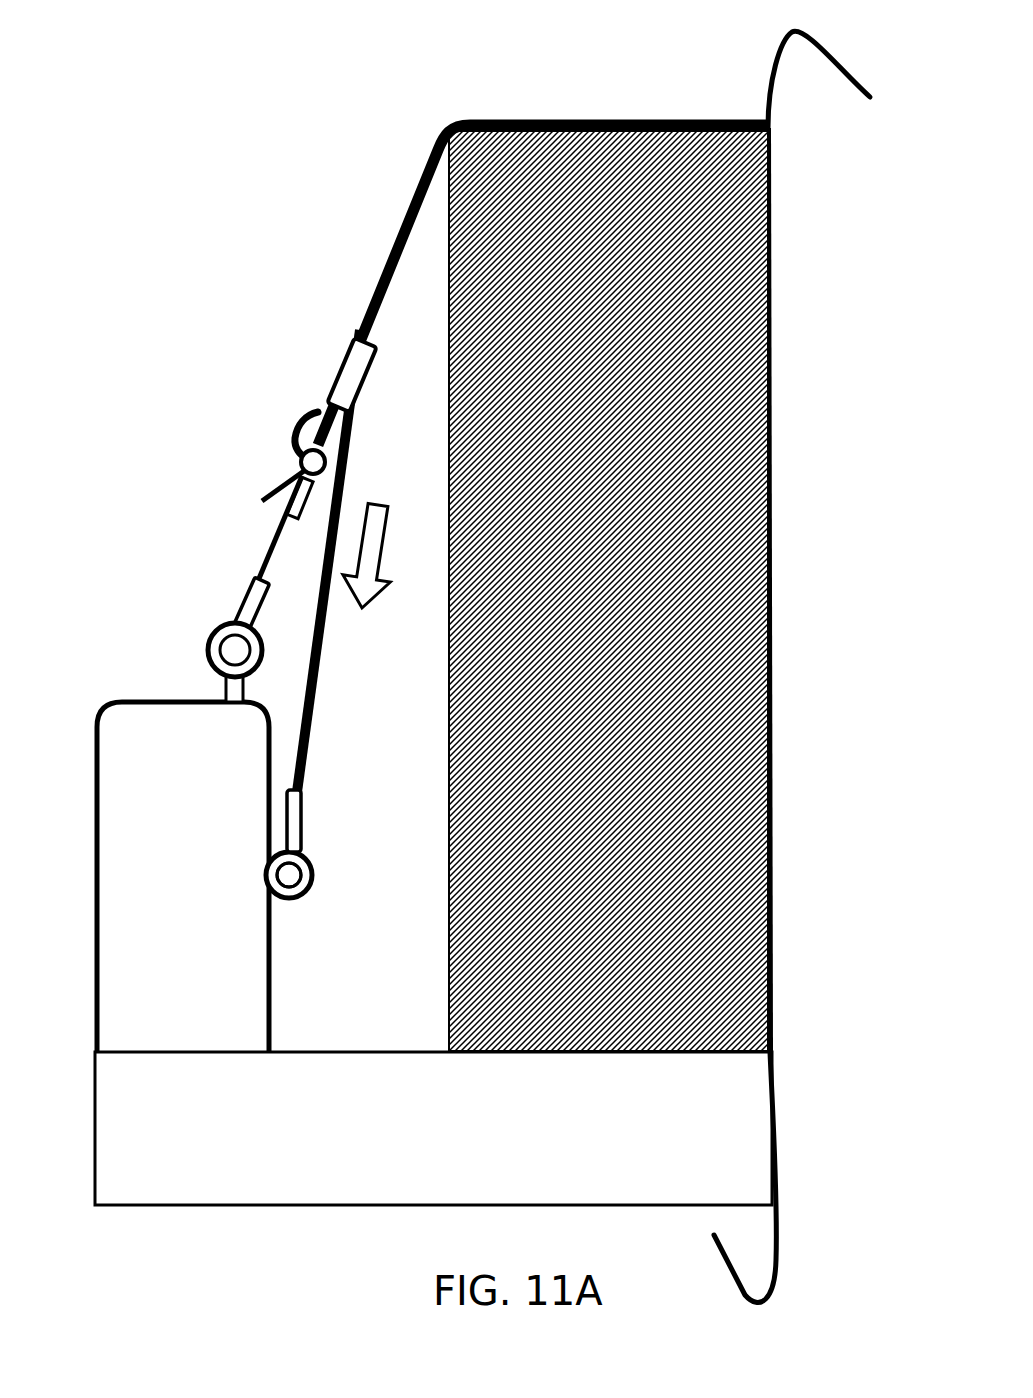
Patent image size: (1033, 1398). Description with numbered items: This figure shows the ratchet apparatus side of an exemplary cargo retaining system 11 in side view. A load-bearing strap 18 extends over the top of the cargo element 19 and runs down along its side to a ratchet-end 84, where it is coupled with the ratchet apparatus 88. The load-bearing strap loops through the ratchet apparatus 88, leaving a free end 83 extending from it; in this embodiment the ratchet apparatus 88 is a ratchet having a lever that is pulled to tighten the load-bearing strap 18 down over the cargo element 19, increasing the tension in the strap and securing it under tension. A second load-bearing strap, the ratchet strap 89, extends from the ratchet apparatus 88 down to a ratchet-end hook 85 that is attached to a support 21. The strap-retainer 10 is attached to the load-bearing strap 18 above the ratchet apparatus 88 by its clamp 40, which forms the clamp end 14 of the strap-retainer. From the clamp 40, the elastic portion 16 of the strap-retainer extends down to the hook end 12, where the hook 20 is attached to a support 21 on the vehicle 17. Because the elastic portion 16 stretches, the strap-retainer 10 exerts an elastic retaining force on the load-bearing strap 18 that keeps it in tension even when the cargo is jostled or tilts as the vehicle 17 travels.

The strap-retainer 10 is at (339, 322).
The cargo retaining system 11 is at (208, 210).
The hook end 12 is at (302, 800).
The clamp end 14 is at (347, 382).
The elastic portion 16 is at (325, 645).
The vehicle 17 is at (112, 820).
The load-bearing strap 18 is at (395, 237).
The cargo element 19 is at (583, 158).
The hook 20 is at (292, 852).
The support 21 is at (216, 650).
The clamp 40 is at (342, 365).
The free end 83 is at (312, 412).
The ratchet-end 84 is at (315, 455).
The ratchet-end hook 85 is at (248, 605).
The ratchet apparatus 88 is at (300, 470).
The ratchet strap 89 is at (280, 558).